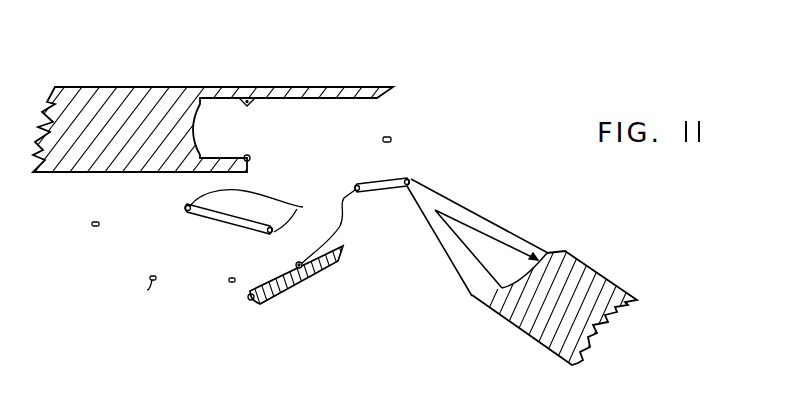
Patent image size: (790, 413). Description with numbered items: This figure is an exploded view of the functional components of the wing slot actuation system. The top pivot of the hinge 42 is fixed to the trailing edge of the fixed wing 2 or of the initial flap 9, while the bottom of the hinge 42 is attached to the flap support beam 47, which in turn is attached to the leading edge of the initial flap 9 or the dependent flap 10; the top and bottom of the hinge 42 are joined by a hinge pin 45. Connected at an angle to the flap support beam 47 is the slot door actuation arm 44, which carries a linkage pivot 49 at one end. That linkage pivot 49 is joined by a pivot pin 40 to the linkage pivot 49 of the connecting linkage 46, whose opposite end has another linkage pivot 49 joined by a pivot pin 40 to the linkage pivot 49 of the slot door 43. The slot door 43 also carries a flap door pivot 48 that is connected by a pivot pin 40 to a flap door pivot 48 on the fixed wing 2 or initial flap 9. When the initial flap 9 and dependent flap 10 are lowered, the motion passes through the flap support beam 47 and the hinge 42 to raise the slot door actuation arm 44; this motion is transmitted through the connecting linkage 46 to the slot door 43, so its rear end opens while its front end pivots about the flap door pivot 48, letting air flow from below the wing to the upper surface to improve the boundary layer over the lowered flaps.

The fixed wing 2 is at (117, 87).
The initial flap 9 is at (344, 208).
The dependent flap 10 is at (502, 315).
The pivot pin 40 is at (231, 280).
The hinge 42 is at (406, 181).
The slot door 43 is at (303, 279).
The slot door actuation arm 44 is at (378, 192).
The hinge pin 45 is at (392, 140).
The connecting linkage 46 is at (221, 224).
The flap support beam 47 is at (470, 250).
The flap door pivot 48 is at (250, 158).
The linkage pivot 49 is at (343, 198).